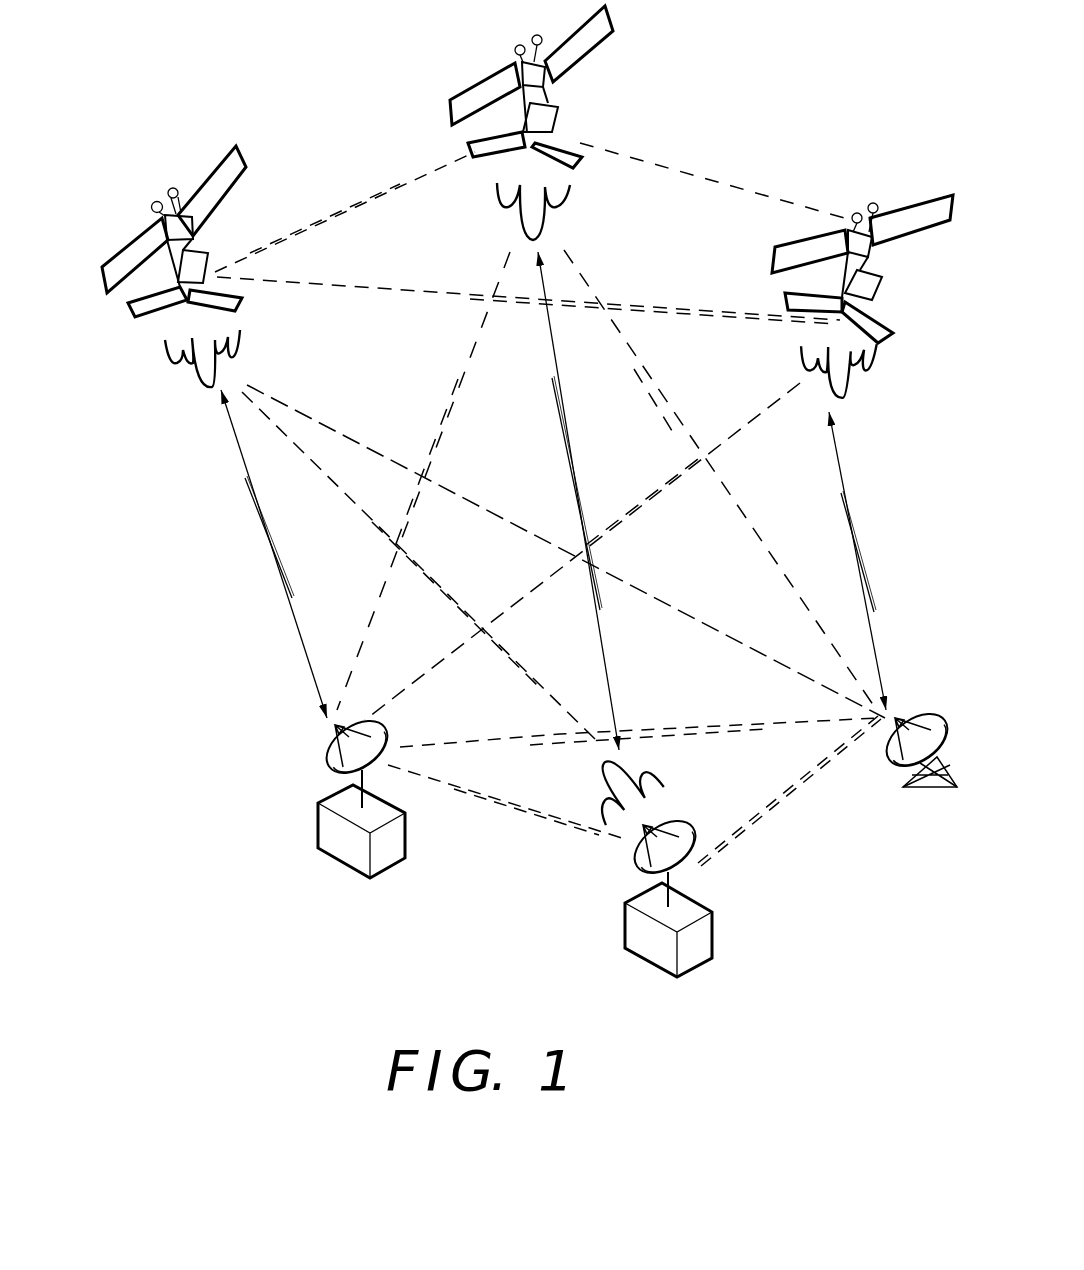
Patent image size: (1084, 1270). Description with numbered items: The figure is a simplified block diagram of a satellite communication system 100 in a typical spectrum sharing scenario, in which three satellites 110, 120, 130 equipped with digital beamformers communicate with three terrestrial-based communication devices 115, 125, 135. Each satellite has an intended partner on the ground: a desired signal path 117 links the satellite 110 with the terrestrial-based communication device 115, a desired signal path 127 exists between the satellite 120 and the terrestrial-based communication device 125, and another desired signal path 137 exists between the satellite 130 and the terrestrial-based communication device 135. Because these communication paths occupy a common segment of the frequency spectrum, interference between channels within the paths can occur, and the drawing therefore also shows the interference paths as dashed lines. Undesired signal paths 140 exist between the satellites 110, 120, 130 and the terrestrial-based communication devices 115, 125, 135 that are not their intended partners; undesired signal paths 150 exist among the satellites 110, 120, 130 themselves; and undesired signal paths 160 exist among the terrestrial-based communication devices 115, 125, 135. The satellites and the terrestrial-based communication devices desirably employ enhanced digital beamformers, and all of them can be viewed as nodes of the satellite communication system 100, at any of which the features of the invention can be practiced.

The satellite communication system 100 is at (498, 985).
The satellite 110 is at (218, 174).
The terrestrial-based communication device 115 is at (330, 831).
The desired signal path 117 is at (292, 605).
The satellite 120 is at (933, 213).
The terrestrial-based communication device 125 is at (928, 712).
The desired signal path 127 is at (853, 516).
The satellite 130 is at (453, 102).
The terrestrial-based communication device 135 is at (705, 923).
The desired signal path 137 is at (573, 447).
The undesired signal paths 140 is at (440, 425).
The undesired signal paths 150 is at (313, 223).
The undesired signal paths 160 is at (523, 737).